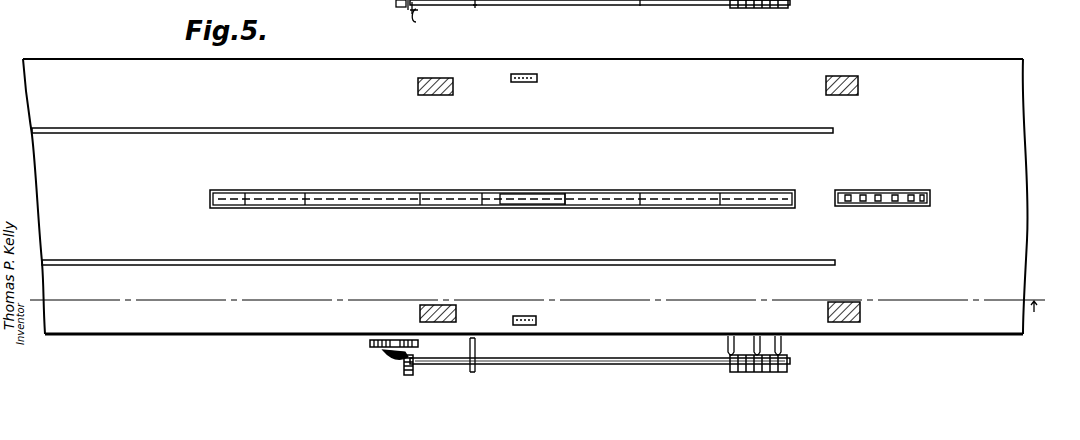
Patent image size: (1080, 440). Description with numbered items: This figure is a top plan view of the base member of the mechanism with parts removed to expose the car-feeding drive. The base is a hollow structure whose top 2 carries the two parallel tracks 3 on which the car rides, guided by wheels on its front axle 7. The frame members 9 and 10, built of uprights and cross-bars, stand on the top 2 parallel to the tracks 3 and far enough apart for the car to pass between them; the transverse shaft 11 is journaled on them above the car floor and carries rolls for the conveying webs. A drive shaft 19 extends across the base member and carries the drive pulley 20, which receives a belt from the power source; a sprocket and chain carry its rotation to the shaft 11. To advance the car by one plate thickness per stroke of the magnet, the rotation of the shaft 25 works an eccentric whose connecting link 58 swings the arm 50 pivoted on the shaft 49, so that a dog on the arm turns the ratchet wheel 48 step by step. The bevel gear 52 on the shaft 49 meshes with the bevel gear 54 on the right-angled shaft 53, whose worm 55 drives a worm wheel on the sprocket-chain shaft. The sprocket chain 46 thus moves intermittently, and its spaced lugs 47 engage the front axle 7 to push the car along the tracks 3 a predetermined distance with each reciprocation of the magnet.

The top 2 is at (502, 184).
The tracks 3 is at (248, 128).
The front axle 7 is at (540, 298).
The frame member 9 is at (445, 95).
The frame member 10 is at (450, 305).
The shaft 11 is at (538, 320).
The drive shaft 19 is at (893, 190).
The drive pulley 20 is at (893, 206).
The shaft 25 is at (634, 5).
The sprocket chain 46 is at (390, 208).
The lugs 47 is at (565, 206).
The ratchet wheel 48 is at (368, 343).
The shaft 49 is at (404, 4).
The arm 50 is at (397, 5).
The bevel gear 52 is at (388, 358).
The shaft 53 is at (580, 4).
The bevel gear 54 is at (433, 368).
The worm 55 is at (765, 10).
The connecting link 58 is at (516, 4).